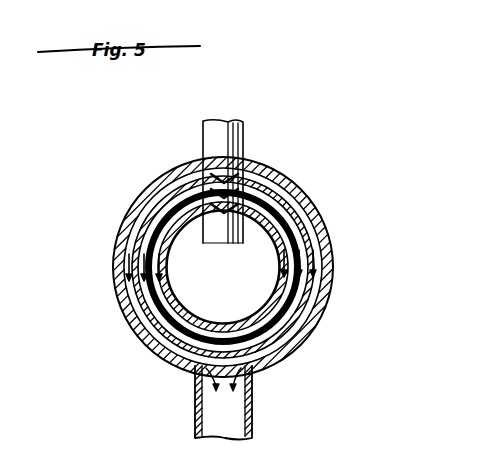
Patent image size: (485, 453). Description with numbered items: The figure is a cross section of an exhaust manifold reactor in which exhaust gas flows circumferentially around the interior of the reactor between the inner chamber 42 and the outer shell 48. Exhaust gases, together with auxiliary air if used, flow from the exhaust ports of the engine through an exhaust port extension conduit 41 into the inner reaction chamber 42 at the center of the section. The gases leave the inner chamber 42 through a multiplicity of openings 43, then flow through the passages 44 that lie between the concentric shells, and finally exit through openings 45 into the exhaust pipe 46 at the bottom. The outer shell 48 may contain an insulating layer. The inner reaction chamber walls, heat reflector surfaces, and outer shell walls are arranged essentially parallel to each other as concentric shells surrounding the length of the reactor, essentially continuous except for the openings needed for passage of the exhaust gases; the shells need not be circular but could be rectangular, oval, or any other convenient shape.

The exhaust port extension conduit 41 is at (205, 130).
The inner reaction chamber 42 is at (262, 296).
The openings 43 is at (241, 163).
The passages 44 is at (283, 245).
The openings 45 is at (216, 372).
The exhaust pipe 46 is at (254, 409).
The outer shell 48 is at (322, 292).